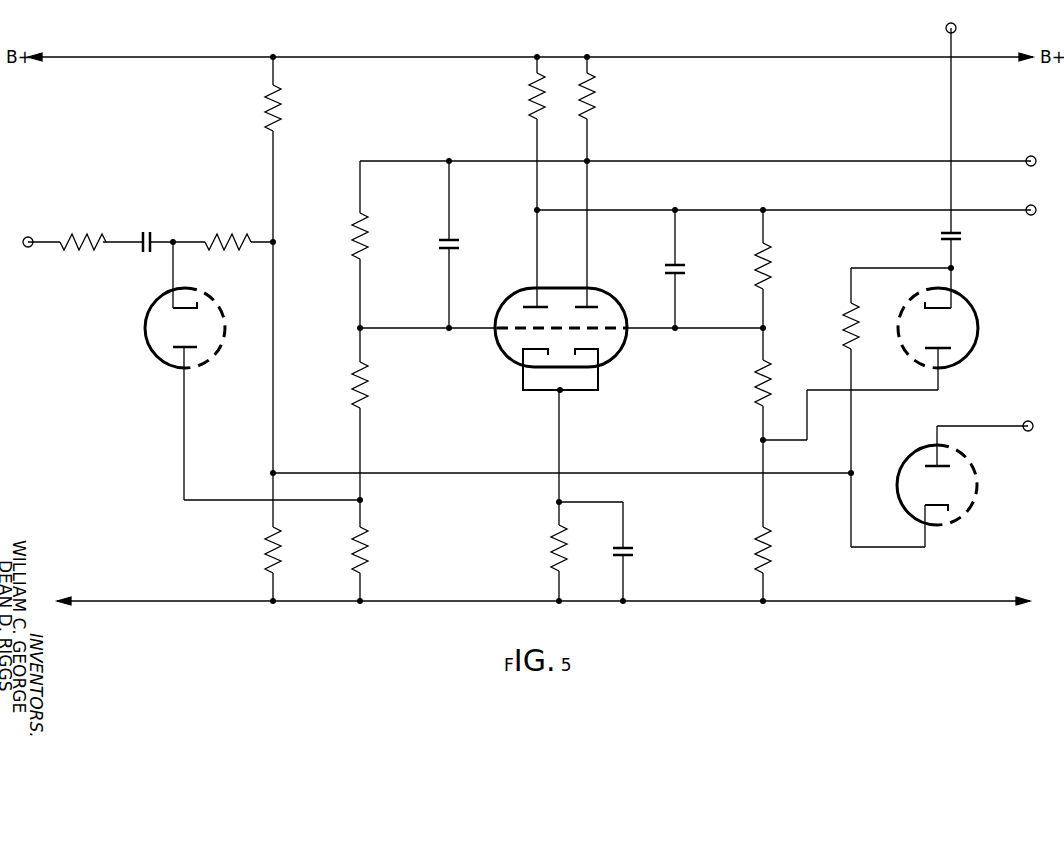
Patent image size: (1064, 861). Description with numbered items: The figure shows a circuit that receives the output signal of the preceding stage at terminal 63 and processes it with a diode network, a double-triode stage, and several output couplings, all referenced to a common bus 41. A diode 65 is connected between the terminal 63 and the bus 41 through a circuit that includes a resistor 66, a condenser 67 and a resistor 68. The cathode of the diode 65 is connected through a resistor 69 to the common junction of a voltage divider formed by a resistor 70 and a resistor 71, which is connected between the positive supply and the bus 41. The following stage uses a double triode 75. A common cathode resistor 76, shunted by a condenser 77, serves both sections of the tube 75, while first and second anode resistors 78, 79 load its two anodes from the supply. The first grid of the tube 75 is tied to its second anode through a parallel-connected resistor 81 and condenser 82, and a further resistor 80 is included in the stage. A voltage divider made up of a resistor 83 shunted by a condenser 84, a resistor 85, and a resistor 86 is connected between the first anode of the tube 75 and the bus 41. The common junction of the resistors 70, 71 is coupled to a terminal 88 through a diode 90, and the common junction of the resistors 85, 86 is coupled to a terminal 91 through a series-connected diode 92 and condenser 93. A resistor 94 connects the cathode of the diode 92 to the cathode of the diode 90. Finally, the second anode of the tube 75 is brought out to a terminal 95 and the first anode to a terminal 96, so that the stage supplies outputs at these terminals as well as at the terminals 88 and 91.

The bus 41 is at (440, 599).
The terminal 63 is at (33, 238).
The diode 65 is at (165, 366).
The resistor 66 is at (78, 246).
The condenser 67 is at (150, 236).
The resistor 68 is at (368, 551).
The resistor 69 is at (218, 238).
The resistor 70 is at (282, 108).
The resistor 71 is at (280, 551).
The double triode 75 is at (510, 366).
The common cathode resistor 76 is at (553, 547).
The condenser 77 is at (632, 548).
The first anode resistor 78 is at (530, 108).
The second anode resistor 79 is at (592, 110).
The resistor 80 is at (368, 394).
The resistor 81 is at (357, 226).
The condenser 82 is at (443, 240).
The resistor 83 is at (770, 263).
The condenser 84 is at (685, 263).
The resistor 85 is at (758, 389).
The resistor 86 is at (770, 553).
The terminal 88 is at (1033, 432).
The diode 90 is at (908, 516).
The terminal 91 is at (956, 28).
The diode 92 is at (960, 368).
The condenser 93 is at (960, 240).
The resistor 94 is at (845, 330).
The terminal 95 is at (1035, 166).
The terminal 96 is at (1035, 216).